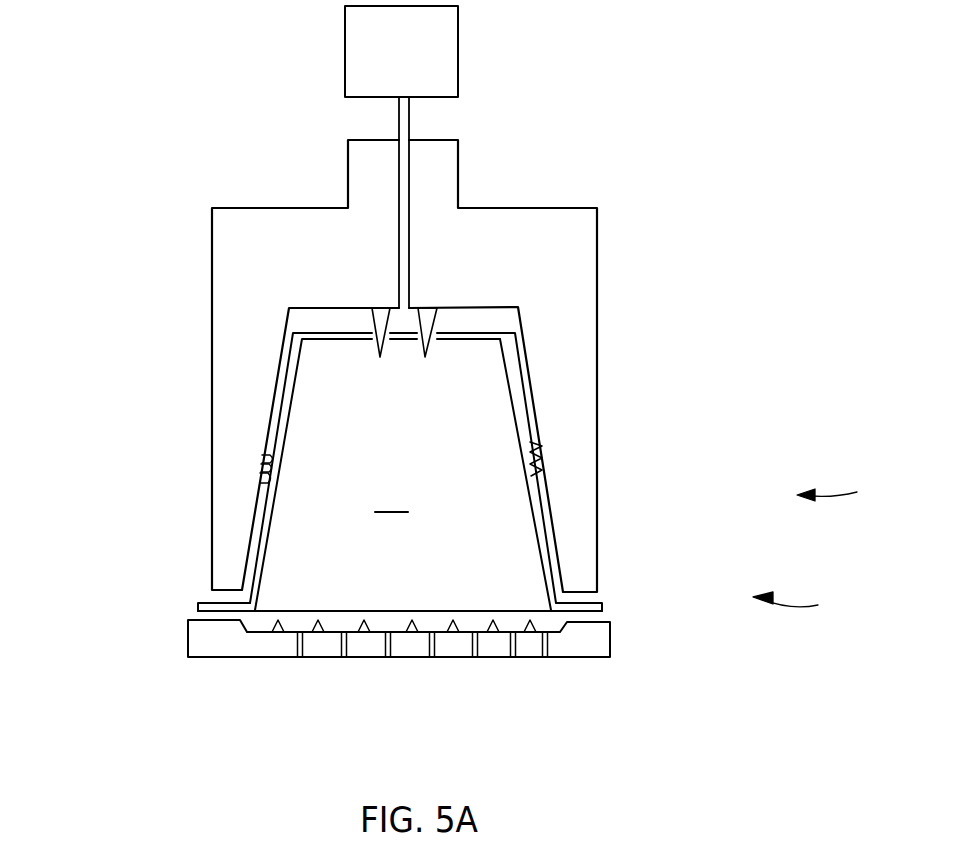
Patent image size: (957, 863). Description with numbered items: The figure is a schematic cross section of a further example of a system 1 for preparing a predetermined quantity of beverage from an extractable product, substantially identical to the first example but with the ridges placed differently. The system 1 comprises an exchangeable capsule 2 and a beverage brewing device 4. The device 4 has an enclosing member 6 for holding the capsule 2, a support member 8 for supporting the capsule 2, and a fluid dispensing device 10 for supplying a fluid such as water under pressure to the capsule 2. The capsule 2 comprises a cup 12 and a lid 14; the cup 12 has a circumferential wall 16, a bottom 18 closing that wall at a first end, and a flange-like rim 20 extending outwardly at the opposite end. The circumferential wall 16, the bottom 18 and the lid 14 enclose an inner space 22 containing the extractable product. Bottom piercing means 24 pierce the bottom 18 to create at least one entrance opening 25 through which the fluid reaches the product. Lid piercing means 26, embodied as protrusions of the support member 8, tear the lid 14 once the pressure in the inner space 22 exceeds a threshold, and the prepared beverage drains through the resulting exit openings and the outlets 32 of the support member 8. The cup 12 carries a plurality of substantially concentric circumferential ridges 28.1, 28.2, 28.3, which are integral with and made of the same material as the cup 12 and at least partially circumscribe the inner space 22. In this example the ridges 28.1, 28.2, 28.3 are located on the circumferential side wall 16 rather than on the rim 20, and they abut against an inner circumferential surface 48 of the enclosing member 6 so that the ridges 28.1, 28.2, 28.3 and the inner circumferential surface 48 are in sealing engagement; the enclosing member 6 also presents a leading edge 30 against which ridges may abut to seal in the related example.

The system 1 is at (837, 499).
The exchangeable capsule 2 is at (523, 433).
The beverage brewing device 4 is at (796, 605).
The enclosing member 6 is at (597, 462).
The support member 8 is at (573, 657).
The fluid dispensing device 10 is at (401, 62).
The cup 12 is at (544, 555).
The lid 14 is at (432, 610).
The circumferential wall 16 is at (539, 517).
The bottom 18 is at (478, 335).
The flange-like rim 20 is at (602, 605).
The inner space 22 is at (390, 499).
The bottom piercing means 24 is at (435, 322).
The entrance opening 25 is at (430, 347).
The lid piercing means 26 is at (363, 634).
The circumferential ridge 28.1 is at (259, 483).
The circumferential ridge 28.2 is at (261, 470).
The circumferential ridge 28.3 is at (263, 456).
The leading edge 30 is at (205, 597).
The outlets 32 is at (433, 657).
The inner circumferential surface 48 is at (516, 657).